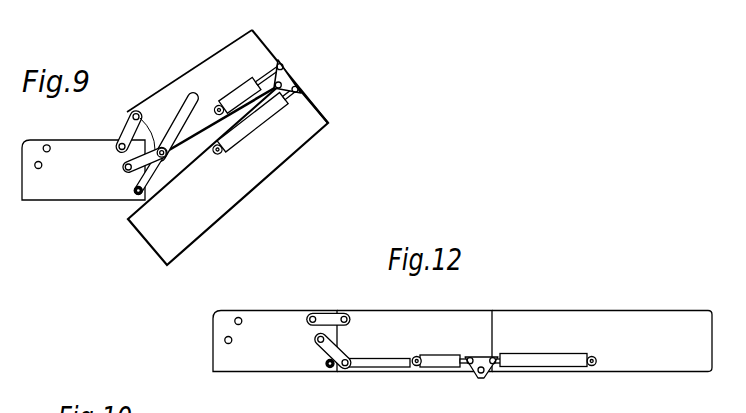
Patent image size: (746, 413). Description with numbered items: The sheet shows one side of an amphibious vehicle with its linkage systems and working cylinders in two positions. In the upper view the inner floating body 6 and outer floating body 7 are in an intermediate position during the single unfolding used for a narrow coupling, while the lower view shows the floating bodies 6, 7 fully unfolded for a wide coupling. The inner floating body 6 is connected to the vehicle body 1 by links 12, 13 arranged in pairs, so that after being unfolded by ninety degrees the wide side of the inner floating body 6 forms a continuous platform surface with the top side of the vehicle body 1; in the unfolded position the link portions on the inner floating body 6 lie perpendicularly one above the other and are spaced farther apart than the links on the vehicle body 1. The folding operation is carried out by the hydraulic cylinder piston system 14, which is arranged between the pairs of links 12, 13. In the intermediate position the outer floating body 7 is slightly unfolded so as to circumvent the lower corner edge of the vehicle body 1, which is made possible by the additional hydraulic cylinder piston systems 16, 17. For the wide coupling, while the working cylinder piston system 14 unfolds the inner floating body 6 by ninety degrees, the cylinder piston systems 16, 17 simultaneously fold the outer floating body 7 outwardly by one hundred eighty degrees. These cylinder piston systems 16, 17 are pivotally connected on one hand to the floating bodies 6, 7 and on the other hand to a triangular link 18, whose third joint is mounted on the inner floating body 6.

In FIG. 9, the vehicle body 1 is at (45, 192).
In FIG. 12, the vehicle body 1 is at (262, 365).
In FIG. 9, the inner floating body 6 is at (227, 91).
In FIG. 12, the inner floating body 6 is at (438, 313).
In FIG. 9, the outer floating body 7 is at (238, 193).
In FIG. 12, the outer floating body 7 is at (576, 315).
In FIG. 9, the link 12 is at (128, 128).
In FIG. 12, the link 12 is at (328, 319).
In FIG. 9, the link 13 is at (128, 172).
In FIG. 12, the link 13 is at (333, 351).
In FIG. 9, the hydraulic cylinder piston system 14 is at (175, 123).
In FIG. 12, the hydraulic cylinder piston system 14 is at (377, 362).
In FIG. 9, the hydraulic cylinder piston system 16 is at (237, 90).
In FIG. 12, the hydraulic cylinder piston system 16 is at (438, 365).
In FIG. 9, the hydraulic cylinder piston system 17 is at (255, 127).
In FIG. 12, the hydraulic cylinder piston system 17 is at (537, 362).
In FIG. 9, the triangular link 18 is at (287, 76).
In FIG. 12, the triangular link 18 is at (476, 355).